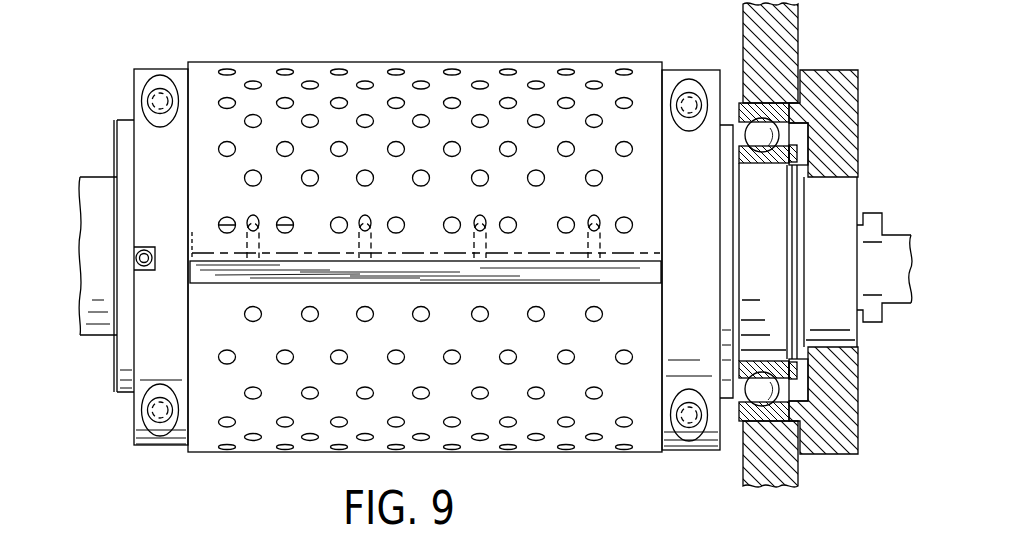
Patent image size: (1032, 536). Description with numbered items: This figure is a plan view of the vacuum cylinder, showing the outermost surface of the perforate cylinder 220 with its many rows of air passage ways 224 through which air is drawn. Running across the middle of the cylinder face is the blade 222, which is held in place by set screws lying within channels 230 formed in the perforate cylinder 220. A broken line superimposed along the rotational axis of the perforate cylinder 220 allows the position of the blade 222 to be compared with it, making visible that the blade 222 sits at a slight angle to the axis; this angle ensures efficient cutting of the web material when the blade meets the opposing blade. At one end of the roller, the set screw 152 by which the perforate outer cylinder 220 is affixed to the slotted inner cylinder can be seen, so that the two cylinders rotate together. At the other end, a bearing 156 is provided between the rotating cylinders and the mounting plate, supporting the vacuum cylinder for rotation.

The set screw 152 is at (137, 256).
The bearing 156 is at (766, 132).
The perforate cylinder 220 is at (430, 63).
The blade 222 is at (242, 276).
The air passage ways 224 is at (339, 69).
The channels 230 is at (253, 216).